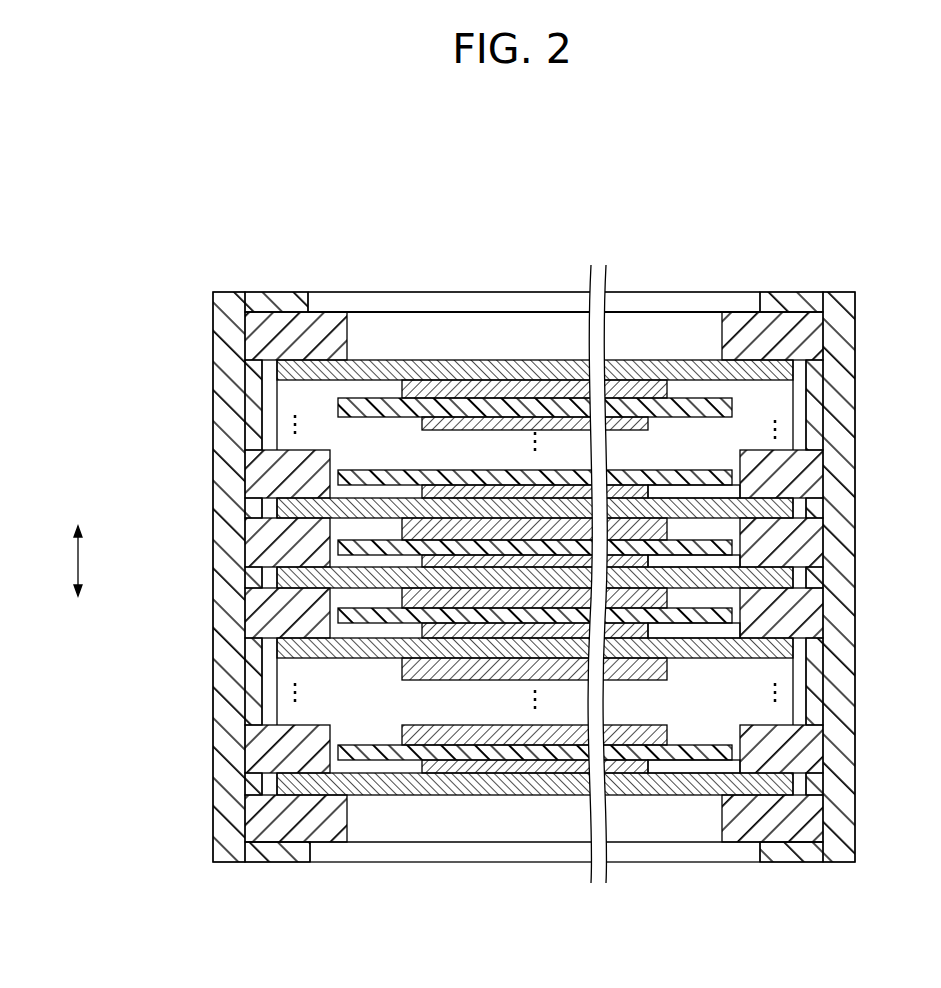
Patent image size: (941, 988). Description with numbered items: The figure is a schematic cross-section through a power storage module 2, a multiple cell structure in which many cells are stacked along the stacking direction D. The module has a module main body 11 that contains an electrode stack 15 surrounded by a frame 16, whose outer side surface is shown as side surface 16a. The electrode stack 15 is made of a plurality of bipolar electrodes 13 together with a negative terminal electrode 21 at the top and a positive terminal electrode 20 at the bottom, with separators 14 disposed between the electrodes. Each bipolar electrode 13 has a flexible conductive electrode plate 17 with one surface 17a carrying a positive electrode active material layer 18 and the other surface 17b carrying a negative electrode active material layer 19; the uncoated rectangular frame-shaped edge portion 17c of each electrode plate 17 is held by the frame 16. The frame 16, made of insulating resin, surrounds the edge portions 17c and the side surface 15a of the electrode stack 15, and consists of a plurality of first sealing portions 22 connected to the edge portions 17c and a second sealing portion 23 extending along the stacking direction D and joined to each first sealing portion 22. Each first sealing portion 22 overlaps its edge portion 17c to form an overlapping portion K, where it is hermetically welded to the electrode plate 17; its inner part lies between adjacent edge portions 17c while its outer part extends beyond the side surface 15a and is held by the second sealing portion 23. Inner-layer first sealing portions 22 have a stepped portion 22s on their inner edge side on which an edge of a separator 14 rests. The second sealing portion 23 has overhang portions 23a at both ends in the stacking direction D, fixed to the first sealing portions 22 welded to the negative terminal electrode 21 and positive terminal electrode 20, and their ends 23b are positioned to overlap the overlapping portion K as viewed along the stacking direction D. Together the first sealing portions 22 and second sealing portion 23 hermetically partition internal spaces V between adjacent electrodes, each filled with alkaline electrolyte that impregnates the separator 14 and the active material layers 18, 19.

The power storage module 2 is at (240, 242).
The module main body 11 is at (858, 240).
The bipolar electrode 13 is at (156, 447).
The separator 14 is at (758, 392).
The electrode stack 15 is at (670, 297).
The side surface of the electrode stack 15a is at (243, 430).
The frame 16 is at (152, 282).
The side surface 16a is at (858, 740).
The electrode plate 17 is at (285, 370).
The one surface of the electrode plate 17a is at (705, 358).
The other surface of the electrode plate 17b is at (742, 358).
The edge portion of the electrode plate 17c is at (775, 510).
The positive electrode active material layer 18 is at (345, 477).
The negative electrode active material layer 19 is at (408, 388).
The positive terminal electrode 20 is at (152, 755).
The negative terminal electrode 21 is at (152, 350).
The first sealing portion 22 is at (255, 336).
The stepped portion 22s is at (334, 452).
The second sealing portion 23 is at (217, 300).
The overhang portion 23a is at (273, 292).
The end of the overhang portion 23b is at (313, 292).
The overlapping portion K is at (344, 368).
The internal space V is at (836, 546).
The stacking direction D is at (76, 560).